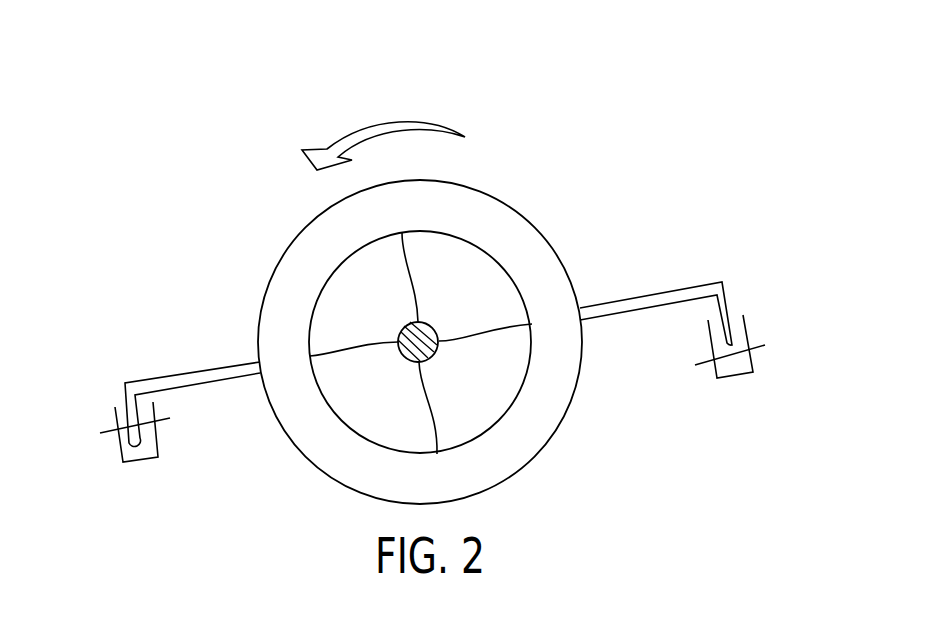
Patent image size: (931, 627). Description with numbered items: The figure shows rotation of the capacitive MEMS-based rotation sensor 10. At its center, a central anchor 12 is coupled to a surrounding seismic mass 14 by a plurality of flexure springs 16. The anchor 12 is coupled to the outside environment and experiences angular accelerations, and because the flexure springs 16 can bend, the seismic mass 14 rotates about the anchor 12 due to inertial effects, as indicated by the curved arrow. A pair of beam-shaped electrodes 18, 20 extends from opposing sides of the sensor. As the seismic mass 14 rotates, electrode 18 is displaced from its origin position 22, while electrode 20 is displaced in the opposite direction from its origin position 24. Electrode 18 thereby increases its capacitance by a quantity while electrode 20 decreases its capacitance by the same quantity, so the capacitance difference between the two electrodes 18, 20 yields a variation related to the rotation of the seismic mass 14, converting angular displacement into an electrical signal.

The MEMS-based rotation sensor 10 is at (533, 143).
The central anchor 12 is at (428, 323).
The seismic mass 14 is at (548, 242).
The flexure springs 16 is at (355, 343).
The beam-shaped electrode 18 is at (145, 382).
The beam-shaped electrode 20 is at (660, 292).
The origin position 22 is at (105, 433).
The origin position 24 is at (755, 352).